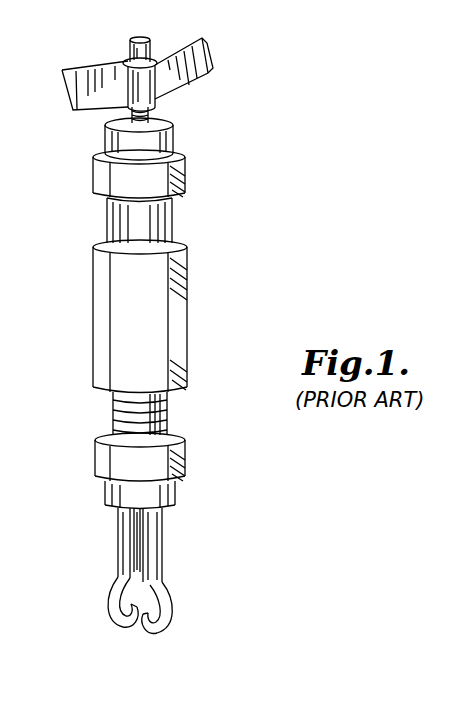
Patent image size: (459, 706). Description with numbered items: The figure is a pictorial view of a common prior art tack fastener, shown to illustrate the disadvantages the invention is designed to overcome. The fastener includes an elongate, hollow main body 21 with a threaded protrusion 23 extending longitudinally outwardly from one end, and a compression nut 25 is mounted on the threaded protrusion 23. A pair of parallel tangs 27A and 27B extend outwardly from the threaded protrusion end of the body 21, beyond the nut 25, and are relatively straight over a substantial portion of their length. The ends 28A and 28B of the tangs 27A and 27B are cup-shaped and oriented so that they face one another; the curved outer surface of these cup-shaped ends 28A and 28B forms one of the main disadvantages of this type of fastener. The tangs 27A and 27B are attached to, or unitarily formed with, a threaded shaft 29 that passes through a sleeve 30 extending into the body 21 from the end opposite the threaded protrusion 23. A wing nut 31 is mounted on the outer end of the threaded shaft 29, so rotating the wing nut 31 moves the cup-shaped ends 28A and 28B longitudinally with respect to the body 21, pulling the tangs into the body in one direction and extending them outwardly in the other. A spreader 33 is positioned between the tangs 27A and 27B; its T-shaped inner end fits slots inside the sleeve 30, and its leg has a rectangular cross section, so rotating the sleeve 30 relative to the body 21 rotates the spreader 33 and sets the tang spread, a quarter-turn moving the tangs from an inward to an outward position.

The main body 21 is at (177, 326).
The threaded protrusion 23 is at (172, 420).
The compression nut 25 is at (185, 465).
The tang 27A is at (118, 545).
The tang 27B is at (158, 562).
The cup-shaped end 28A is at (110, 614).
The cup-shaped end 28B is at (168, 623).
The threaded shaft 29 is at (140, 37).
The sleeve 30 is at (182, 174).
The wing nut 31 is at (211, 67).
The spreader 33 is at (140, 540).